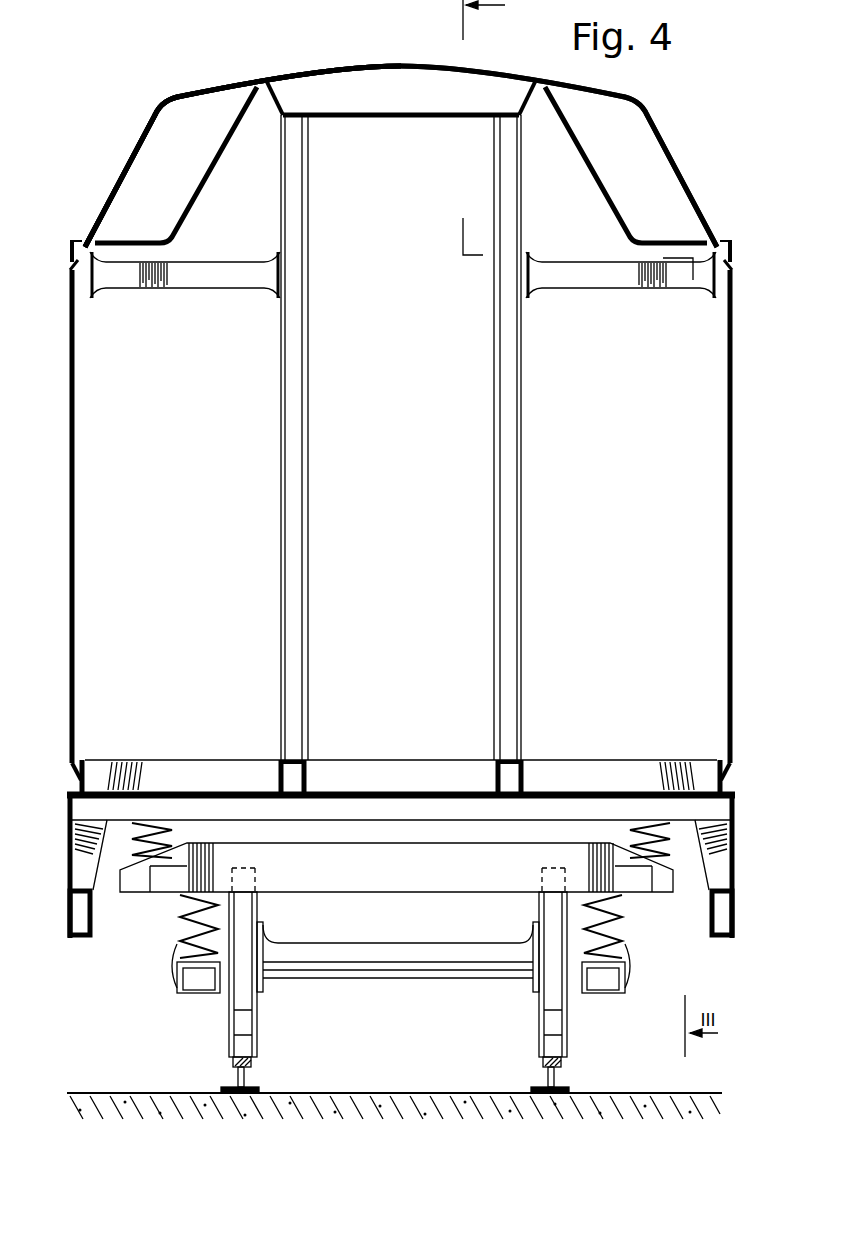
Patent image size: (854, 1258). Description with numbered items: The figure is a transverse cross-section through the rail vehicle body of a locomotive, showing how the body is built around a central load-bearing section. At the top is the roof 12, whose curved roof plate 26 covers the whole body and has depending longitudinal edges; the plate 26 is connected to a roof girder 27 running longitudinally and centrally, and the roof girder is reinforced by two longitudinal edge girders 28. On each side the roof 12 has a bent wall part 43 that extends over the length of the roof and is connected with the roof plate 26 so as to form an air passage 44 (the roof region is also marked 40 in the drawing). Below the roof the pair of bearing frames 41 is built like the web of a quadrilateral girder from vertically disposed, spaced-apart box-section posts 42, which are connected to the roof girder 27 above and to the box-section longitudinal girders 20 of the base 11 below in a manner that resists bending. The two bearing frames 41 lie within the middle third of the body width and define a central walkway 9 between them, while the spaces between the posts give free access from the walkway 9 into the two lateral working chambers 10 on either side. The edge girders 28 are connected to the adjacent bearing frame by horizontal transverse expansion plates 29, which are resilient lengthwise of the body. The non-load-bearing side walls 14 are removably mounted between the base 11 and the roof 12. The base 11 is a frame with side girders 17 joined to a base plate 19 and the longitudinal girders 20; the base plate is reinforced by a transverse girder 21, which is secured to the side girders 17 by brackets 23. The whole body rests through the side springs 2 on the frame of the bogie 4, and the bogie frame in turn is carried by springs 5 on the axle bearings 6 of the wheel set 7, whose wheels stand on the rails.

The side springs 2 is at (142, 865).
The bogie 4 is at (470, 893).
The springs 5 is at (182, 925).
The axle bearings 6 is at (188, 982).
The wheel set 7 is at (395, 975).
The walkway 9 is at (389, 407).
The lateral working chambers 10 is at (171, 407).
The base 11 is at (406, 834).
The roof 12 is at (358, 64).
The side walls 14 is at (76, 447).
The side girders 17 is at (70, 912).
The base plate 19 is at (638, 793).
The longitudinal girders 20 is at (278, 780).
The transverse girder 21 is at (602, 765).
The brackets 23 is at (78, 858).
The roof plate 26 is at (418, 66).
The roof girder 27 is at (407, 120).
The longitudinal edge girders 28 is at (70, 292).
The transverse expansion plates 29 is at (188, 278).
The roof structure 40 is at (277, 64).
The bearing frames 41 is at (482, 485).
The posts 42 is at (287, 552).
The bent wall parts 43 is at (208, 183).
The air passage 44 is at (143, 137).